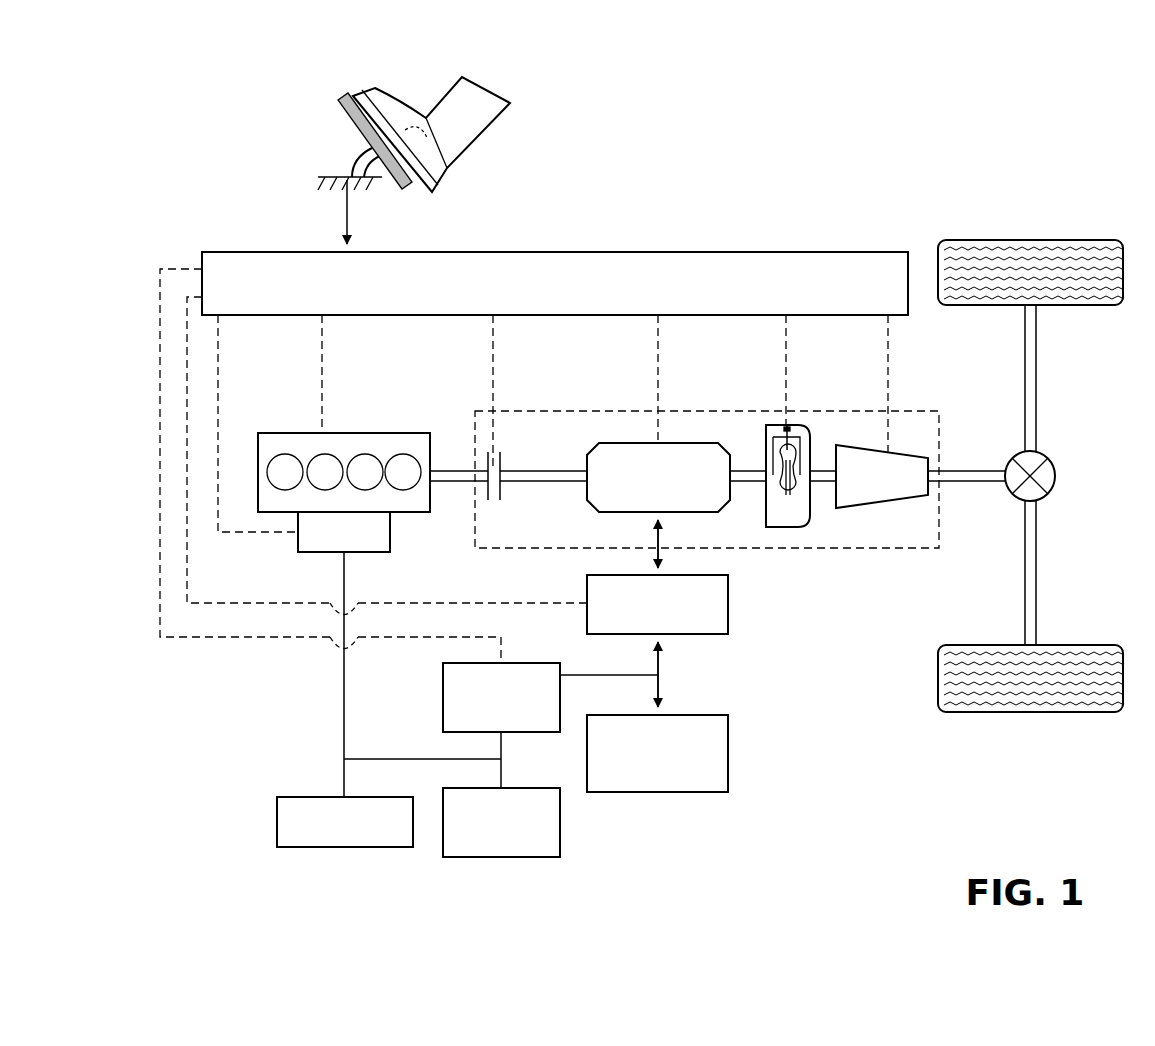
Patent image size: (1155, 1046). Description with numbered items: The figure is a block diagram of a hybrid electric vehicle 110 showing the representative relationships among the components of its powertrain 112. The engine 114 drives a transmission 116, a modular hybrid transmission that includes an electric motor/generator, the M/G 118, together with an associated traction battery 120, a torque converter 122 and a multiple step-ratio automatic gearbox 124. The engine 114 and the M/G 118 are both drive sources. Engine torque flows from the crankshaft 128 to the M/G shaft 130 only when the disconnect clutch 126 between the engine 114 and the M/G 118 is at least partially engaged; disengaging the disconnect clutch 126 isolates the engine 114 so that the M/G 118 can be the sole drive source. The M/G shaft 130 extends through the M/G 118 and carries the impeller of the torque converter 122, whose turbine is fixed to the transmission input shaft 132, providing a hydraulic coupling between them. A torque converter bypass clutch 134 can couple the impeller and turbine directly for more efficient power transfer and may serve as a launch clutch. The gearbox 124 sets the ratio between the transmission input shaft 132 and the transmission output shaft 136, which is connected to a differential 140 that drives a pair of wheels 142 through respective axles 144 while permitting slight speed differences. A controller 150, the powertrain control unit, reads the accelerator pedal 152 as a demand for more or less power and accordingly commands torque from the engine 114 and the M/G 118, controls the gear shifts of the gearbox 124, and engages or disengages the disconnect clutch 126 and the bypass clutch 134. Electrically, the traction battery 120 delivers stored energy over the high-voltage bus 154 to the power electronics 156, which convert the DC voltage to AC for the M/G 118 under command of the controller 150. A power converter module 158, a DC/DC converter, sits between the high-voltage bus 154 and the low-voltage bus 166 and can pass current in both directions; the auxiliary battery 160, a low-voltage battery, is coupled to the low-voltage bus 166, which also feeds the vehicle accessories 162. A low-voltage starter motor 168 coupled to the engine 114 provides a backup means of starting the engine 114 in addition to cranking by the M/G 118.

The hybrid electric vehicle 110 is at (822, 160).
The powertrain 112 is at (818, 703).
The engine 114 is at (298, 433).
The transmission 116 is at (750, 408).
The electric motor/generator (M/G) 118 is at (633, 443).
The traction battery 120 is at (728, 752).
The torque converter 122 is at (790, 528).
The gearbox 124 is at (876, 508).
The disconnect clutch 126 is at (499, 485).
The crankshaft 128 is at (463, 470).
The M/G shaft 130 is at (545, 470).
The transmission input shaft 132 is at (818, 470).
The torque converter bypass clutch 134 is at (787, 430).
The transmission output shaft 136 is at (960, 470).
The differential 140 is at (1057, 477).
The wheels 142 is at (1030, 240).
The axles 144 is at (1038, 380).
The controller (powertrain control unit) 150 is at (595, 252).
The accelerator pedal 152 is at (357, 130).
The high-voltage bus 154 is at (658, 687).
The power electronics 156 is at (728, 603).
The power converter module 158 is at (443, 697).
The auxiliary battery 160 is at (560, 822).
The accessories 162 is at (277, 822).
The low-voltage bus 166 is at (344, 705).
The low-voltage starter motor 168 is at (393, 532).